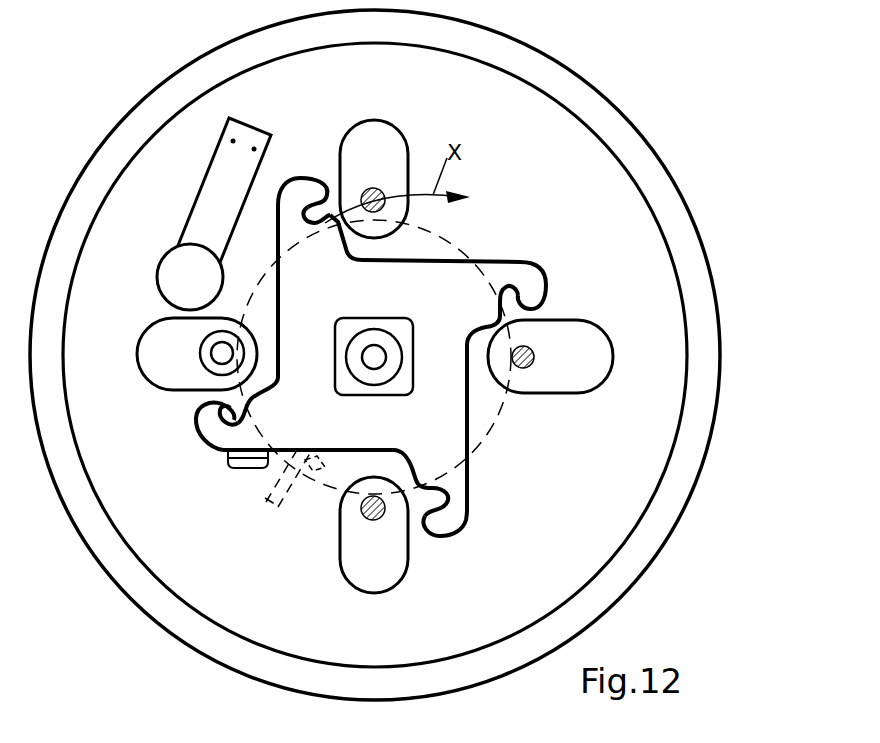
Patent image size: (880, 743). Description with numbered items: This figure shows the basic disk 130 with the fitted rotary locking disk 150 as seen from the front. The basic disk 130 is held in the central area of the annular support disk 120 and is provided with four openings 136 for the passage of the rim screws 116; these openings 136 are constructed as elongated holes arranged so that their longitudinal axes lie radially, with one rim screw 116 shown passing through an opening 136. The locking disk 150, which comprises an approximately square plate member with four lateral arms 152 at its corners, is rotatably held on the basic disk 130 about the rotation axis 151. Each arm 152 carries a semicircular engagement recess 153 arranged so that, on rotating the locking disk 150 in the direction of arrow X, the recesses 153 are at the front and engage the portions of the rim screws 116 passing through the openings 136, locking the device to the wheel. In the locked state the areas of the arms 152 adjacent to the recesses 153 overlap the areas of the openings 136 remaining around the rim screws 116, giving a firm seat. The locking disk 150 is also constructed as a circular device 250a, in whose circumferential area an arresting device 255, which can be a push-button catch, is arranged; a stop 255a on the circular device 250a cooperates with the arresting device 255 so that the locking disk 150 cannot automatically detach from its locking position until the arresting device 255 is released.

The basic disk 130 is at (375, 355).
The support disk 120 is at (530, 118).
The openings 136 is at (387, 135).
The rim screws 116 is at (200, 383).
The rotation axis 151 is at (366, 362).
The locking disk 150 is at (478, 251).
The lateral arms 152 is at (300, 180).
The engagement recess 153 is at (317, 200).
The circular device 250a is at (452, 245).
The arresting device 255 is at (268, 505).
The stop 255a is at (311, 475).